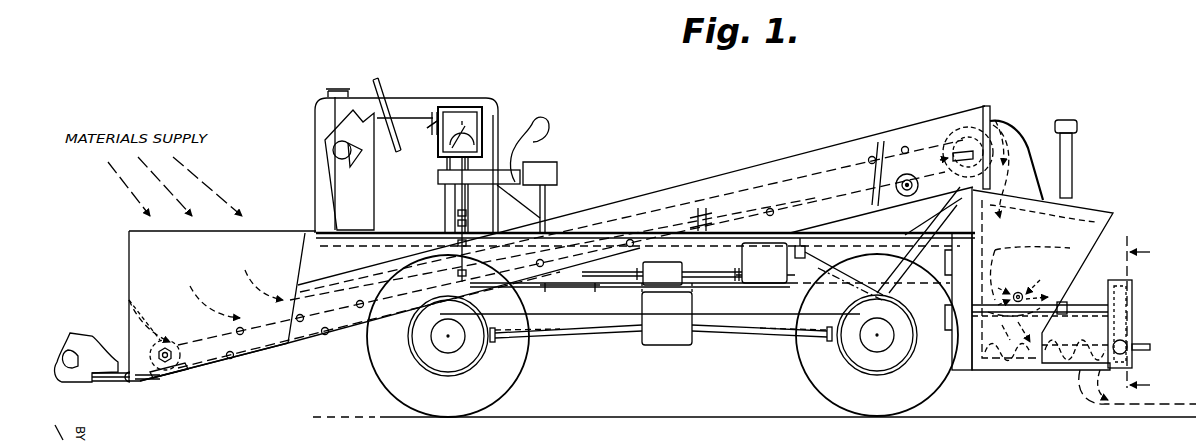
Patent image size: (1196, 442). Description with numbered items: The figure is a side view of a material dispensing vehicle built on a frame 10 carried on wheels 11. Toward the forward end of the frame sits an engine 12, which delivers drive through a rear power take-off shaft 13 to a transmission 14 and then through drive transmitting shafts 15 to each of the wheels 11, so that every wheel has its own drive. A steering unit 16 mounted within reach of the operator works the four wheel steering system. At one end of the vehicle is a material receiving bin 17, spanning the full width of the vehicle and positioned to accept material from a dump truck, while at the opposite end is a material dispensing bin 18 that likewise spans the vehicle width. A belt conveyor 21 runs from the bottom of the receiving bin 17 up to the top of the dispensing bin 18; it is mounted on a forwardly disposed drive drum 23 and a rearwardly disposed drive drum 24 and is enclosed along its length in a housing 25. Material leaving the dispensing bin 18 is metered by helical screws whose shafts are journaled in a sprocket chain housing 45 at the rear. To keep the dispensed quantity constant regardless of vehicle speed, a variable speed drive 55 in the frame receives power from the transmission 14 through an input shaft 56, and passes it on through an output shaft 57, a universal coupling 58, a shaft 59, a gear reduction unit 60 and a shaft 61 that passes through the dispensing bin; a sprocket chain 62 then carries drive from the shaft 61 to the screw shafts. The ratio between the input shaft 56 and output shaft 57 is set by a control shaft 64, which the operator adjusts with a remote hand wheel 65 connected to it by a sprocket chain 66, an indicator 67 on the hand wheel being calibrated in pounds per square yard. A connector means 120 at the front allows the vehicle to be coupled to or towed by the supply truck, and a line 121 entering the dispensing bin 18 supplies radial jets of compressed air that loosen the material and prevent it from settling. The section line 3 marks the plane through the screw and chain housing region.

The section line 3- 3 is at (1130, 312).
The frame 10 is at (622, 310).
The wheels 11 is at (378, 354).
The engine 12 is at (408, 101).
The rear power take-off shaft 13 is at (592, 276).
The transmission 14 is at (660, 340).
The drive transmitting shafts 15 is at (588, 328).
The steering unit 16 is at (330, 130).
The material receiving bin 17 is at (126, 270).
The material dispensing bin 18 is at (1086, 208).
The belt conveyor 21 is at (702, 195).
The forwardly disposed drive drum 23 is at (973, 114).
The rearwardly disposed drive drum 24 is at (172, 370).
The conveyor housing 25 is at (636, 206).
The sprocket chain housing 45 is at (1132, 298).
The variable speed drive 55 is at (765, 270).
The input shaft 56 is at (718, 272).
The output shaft 57 is at (800, 246).
The universal coupling 58 is at (844, 268).
The shaft 59 is at (835, 283).
The gear reduction unit 60 is at (943, 301).
The shaft 61 is at (1040, 301).
The sprocket chain 62 is at (1134, 306).
The control shaft 64 is at (632, 273).
The remote hand wheel 65 is at (420, 140).
The sprocket chain 66 is at (456, 216).
The indicator 67 is at (468, 110).
The connector means 120 is at (100, 320).
The line 121 is at (1020, 293).